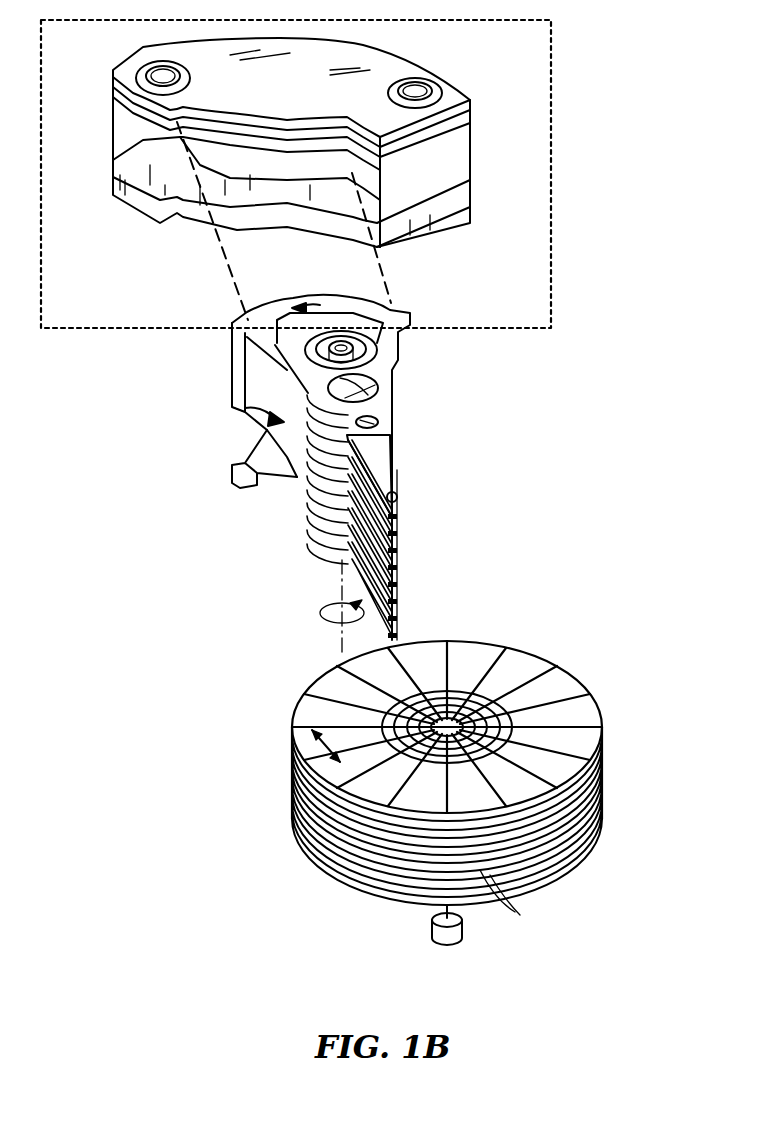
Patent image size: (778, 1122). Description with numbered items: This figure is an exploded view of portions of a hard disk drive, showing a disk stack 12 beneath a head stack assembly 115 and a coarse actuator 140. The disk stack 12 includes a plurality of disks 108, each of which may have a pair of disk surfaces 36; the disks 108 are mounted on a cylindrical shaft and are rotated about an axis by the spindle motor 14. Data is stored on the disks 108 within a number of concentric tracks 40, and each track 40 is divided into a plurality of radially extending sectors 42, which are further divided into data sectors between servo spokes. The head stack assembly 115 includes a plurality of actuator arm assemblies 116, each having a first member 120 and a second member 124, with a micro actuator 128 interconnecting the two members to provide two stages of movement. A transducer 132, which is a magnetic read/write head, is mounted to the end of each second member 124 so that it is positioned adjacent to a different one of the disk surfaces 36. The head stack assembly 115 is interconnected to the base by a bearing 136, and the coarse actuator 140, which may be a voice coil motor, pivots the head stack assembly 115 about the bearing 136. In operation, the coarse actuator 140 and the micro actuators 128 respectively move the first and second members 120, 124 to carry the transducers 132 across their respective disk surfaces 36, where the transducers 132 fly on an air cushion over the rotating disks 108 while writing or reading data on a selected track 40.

The disk stack 12 is at (430, 769).
The spindle motor 14 is at (432, 925).
The disk surfaces 36 is at (468, 748).
The concentric tracks 40 is at (462, 695).
The radially extending sectors 42 is at (305, 752).
The disk 108 is at (511, 908).
The head stack assembly 115 is at (243, 408).
The actuator arm assembly 116 is at (401, 475).
The first member 120 is at (388, 452).
The second member 124 is at (398, 503).
The micro actuator 128 is at (397, 495).
The transducer 132 is at (397, 523).
The bearing 136 is at (355, 355).
The coarse actuator 140 is at (551, 162).